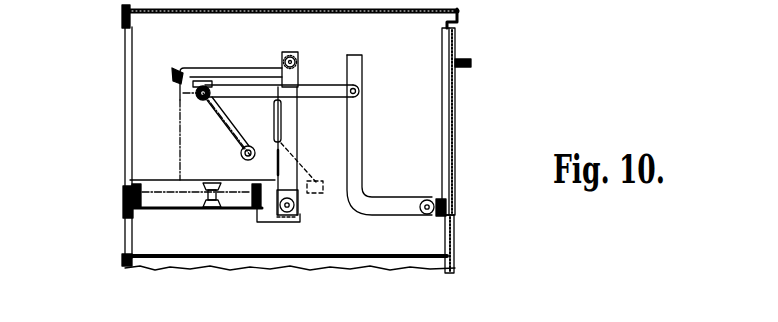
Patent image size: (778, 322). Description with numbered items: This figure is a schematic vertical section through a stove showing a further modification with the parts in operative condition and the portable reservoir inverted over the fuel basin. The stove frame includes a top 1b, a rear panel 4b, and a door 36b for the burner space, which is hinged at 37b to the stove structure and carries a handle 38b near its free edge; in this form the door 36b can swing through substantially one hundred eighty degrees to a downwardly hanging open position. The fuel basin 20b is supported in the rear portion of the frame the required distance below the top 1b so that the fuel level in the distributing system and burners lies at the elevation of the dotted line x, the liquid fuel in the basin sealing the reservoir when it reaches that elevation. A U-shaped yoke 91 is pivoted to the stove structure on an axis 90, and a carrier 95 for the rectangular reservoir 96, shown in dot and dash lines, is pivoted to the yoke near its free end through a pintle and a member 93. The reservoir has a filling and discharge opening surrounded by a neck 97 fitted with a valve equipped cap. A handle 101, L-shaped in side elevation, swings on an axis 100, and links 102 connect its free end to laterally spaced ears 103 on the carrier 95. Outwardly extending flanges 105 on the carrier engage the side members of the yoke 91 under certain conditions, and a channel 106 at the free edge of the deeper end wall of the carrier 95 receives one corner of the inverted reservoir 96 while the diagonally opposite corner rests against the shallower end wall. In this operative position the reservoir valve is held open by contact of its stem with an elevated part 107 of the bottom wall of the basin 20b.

The top 1b is at (460, 16).
The rear panel 4b is at (124, 28).
The door 36b is at (456, 100).
The hinge 37b is at (450, 217).
The handle 38b is at (471, 63).
The axis 90 is at (298, 204).
The yoke 91 is at (283, 163).
The member 93 is at (283, 56).
The carrier 95 is at (250, 73).
The reservoir 96 is at (207, 132).
The neck 97 is at (207, 172).
The axis 100 is at (436, 209).
The handle 101 is at (353, 70).
The links 102 is at (308, 92).
The ears 103 is at (193, 88).
The flanges 105 is at (275, 117).
The channel 106 is at (330, 190).
The elevated part 107 is at (212, 209).
The fuel basin 20b is at (150, 202).
The dotted line x is at (162, 192).